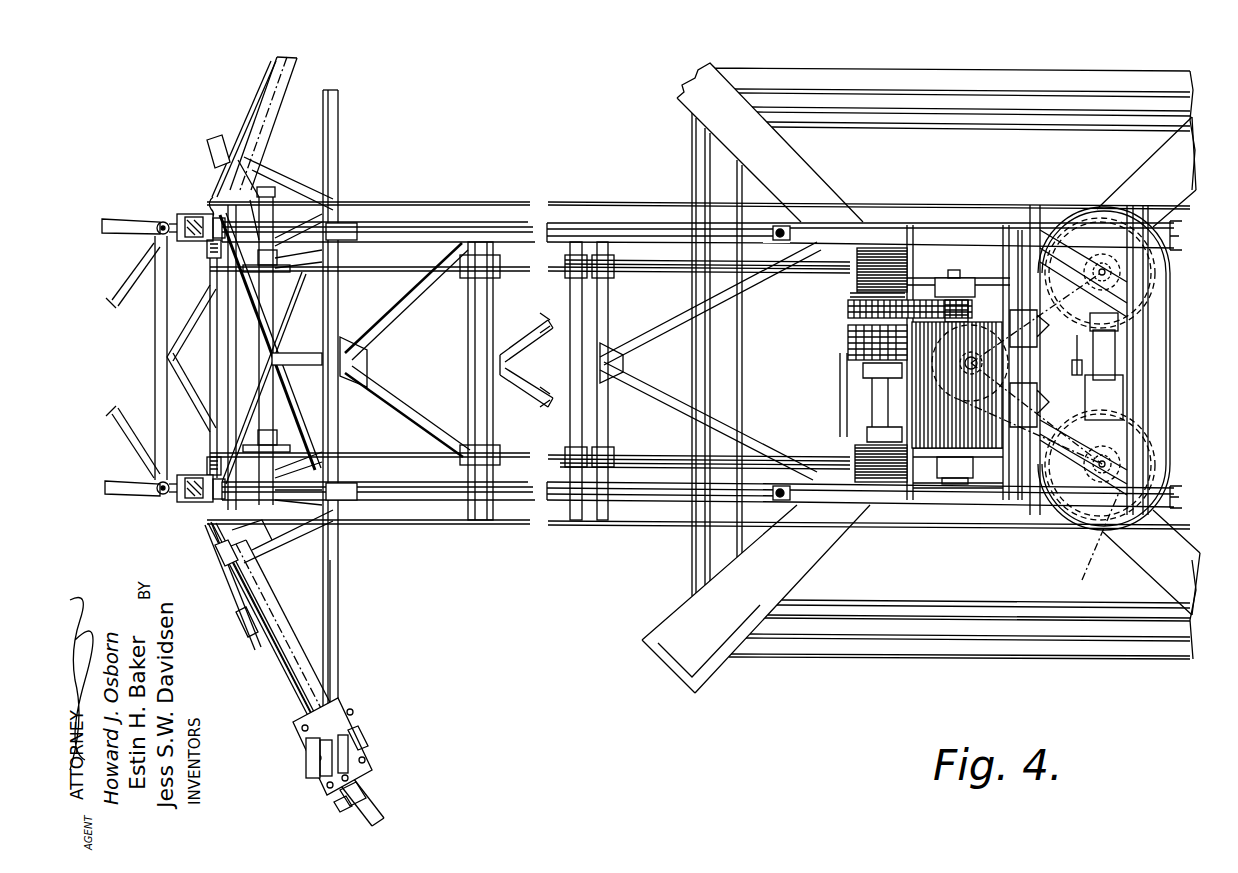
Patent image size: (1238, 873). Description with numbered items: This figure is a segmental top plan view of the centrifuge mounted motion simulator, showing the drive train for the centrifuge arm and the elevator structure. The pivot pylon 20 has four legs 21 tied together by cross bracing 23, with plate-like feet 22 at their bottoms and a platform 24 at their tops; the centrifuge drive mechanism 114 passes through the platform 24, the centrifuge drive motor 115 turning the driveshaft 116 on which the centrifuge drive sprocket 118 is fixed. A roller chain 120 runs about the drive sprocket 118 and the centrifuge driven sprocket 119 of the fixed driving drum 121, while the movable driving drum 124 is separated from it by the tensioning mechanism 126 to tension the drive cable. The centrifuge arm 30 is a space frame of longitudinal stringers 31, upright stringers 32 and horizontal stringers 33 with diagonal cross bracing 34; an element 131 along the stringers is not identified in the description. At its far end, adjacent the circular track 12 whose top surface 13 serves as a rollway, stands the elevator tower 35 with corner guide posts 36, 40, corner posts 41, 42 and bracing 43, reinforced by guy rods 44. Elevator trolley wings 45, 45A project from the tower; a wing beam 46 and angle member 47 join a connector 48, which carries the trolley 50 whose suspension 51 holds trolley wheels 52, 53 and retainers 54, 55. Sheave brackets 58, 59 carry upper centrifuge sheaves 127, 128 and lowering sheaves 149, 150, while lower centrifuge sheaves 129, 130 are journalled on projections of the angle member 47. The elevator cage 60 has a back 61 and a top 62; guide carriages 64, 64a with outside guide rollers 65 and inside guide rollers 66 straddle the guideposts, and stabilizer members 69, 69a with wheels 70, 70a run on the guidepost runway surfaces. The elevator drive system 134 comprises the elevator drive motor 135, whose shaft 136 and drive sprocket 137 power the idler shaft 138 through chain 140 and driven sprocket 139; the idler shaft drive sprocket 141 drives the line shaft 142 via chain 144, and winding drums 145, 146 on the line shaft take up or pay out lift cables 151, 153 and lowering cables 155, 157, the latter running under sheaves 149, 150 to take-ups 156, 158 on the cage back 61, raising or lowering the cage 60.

The continuous circular track 12 is at (288, 56).
The top surface 13 is at (292, 701).
The pivot pylon 20 is at (693, 105).
The legs 21 is at (708, 115).
The plate like feet 22 is at (690, 686).
The cross bracing 23 is at (692, 162).
The platform 24 is at (840, 385).
The centrifuge arm 30 is at (507, 219).
The longitudinal stringers 31 is at (628, 214).
The upright stringers 32 is at (1184, 236).
The horizontal stringers 33 is at (470, 306).
The cross bracing 34 is at (662, 338).
The elevator tower 35 is at (215, 508).
The corner guide post 36 is at (215, 196).
The corner guide post 40 is at (208, 562).
The corner post 41 is at (341, 224).
The corner post 42 is at (339, 486).
The horizontal and diagonal bracing 43 is at (290, 353).
The guy rods 44 is at (574, 226).
The elevator trolley wing 45 is at (341, 680).
The elevator trolley wing 45A is at (322, 132).
The wing beam 46 is at (339, 636).
The angle member 47 is at (302, 74).
The connector 48 is at (346, 762).
The trolley 50 is at (322, 794).
The trolley suspension structure 51 is at (360, 785).
The trolley wheels 52 is at (296, 725).
The trolley wheels 53 is at (352, 806).
The trolley retainer 54 is at (304, 772).
The trolley retainer 55 is at (352, 740).
The sheave bracket 58 is at (272, 341).
The sheave bracket 59 is at (296, 440).
The elevator cage 60 is at (145, 214).
The back 61 is at (160, 331).
The top 62 is at (113, 236).
The top vertical guide carriage 64 is at (179, 216).
The top vertical guide carriage 64a is at (182, 500).
The outside guide rollers 65 is at (200, 216).
The inside guide rollers 66 is at (160, 233).
The top tangential stabilizer member 69 is at (210, 262).
The top tangential stabilizer member 69a is at (196, 468).
The wheel 70 is at (205, 247).
The wheel 70a is at (205, 472).
The centrifuge drive mechanism 114 is at (956, 404).
The centrifuge drive motor 115 is at (956, 390).
The centrifuge driveshaft 116 is at (948, 368).
The centrifuge drive sprocket 118 is at (985, 348).
The centrifuge driven sprocket 119 is at (1096, 536).
The centrifuge drive multiple roller chain 120 is at (1000, 502).
The fixed driving drum 121 is at (1078, 512).
The movable driving drum 124 is at (1088, 226).
The tensioning mechanism 126 is at (1116, 352).
The upper centrifuge sheave 127 is at (313, 200).
The upper centrifuge sheave 128 is at (270, 565).
The lower centrifuge sheave 129 is at (227, 135).
The lower centrifuge sheave 130 is at (250, 614).
The rail 131 is at (268, 78).
The elevator drive system 134 is at (898, 408).
The elevator drive motor 135 is at (978, 502).
The elevator drive shaft 136 is at (960, 271).
The drive sprocket 137 is at (980, 293).
The elevator idler shaft 138 is at (852, 273).
The idler shaft driven sprocket 139 is at (850, 300).
The idler shaft silent drive chain 140 is at (848, 312).
The idler shaft drive sprocket 141 is at (848, 354).
The line shaft 142 is at (862, 398).
The line shaft silent drive chain 144 is at (848, 336).
The winding drum 145 is at (882, 248).
The winding drum 146 is at (883, 448).
The elevator lowering sheave 149 is at (290, 274).
The lowering sheave 150 is at (285, 444).
The lift cable 151 is at (644, 260).
The lift cable 153 is at (652, 470).
The lowering cable 155 is at (418, 272).
The take up eye 156 is at (197, 323).
The lowering cable 157 is at (390, 450).
The lowering cable take-up 158 is at (212, 400).